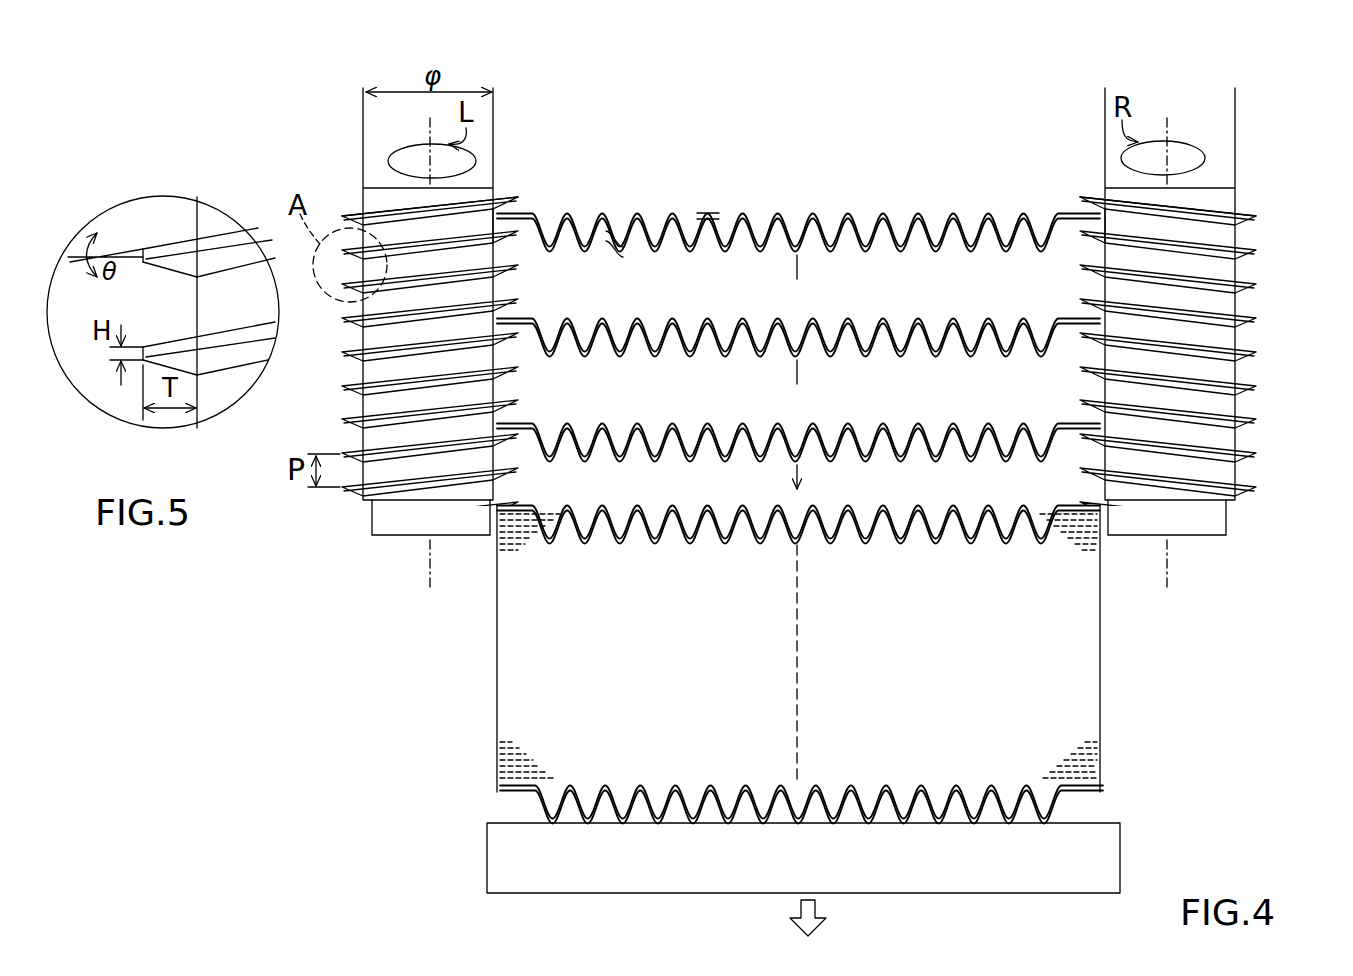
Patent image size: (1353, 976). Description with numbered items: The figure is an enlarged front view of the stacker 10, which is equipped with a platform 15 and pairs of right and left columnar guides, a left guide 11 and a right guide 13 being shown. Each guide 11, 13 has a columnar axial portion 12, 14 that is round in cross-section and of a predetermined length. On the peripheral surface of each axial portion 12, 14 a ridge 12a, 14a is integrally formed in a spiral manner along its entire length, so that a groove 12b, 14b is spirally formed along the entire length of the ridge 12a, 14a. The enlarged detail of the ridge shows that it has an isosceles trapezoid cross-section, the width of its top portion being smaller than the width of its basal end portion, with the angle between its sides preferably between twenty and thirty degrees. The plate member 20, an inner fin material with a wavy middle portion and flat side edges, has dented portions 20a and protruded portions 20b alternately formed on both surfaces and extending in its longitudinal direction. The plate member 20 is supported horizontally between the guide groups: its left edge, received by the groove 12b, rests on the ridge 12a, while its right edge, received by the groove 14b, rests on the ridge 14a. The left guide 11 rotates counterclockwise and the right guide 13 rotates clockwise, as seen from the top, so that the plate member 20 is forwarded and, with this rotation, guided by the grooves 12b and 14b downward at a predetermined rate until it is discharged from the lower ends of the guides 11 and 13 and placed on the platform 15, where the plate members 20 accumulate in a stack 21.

In FIG. 4, the stacker 10 is at (776, 171).
In FIG. 4, the left guide 11 is at (362, 198).
In FIG. 4, the axial portion 12 is at (370, 368).
In FIG. 4, the ridge 12a is at (515, 196).
In FIG. 5, the ridge 12a is at (170, 254).
In FIG. 4, the groove 12b is at (500, 211).
In FIG. 5, the groove 12b is at (197, 290).
In FIG. 4, the right guide 13 is at (1233, 196).
In FIG. 4, the axial portion 14 is at (1256, 364).
In FIG. 4, the ridge 14a is at (1088, 192).
In FIG. 4, the groove 14b is at (1087, 211).
In FIG. 4, the platform 15 is at (528, 822).
In FIG. 4, the plate member 20 is at (859, 214).
In FIG. 4, the dented portion 20a is at (725, 217).
In FIG. 4, the protruded portion 20b is at (641, 216).
In FIG. 4, the stacked tube body 21 is at (1100, 667).